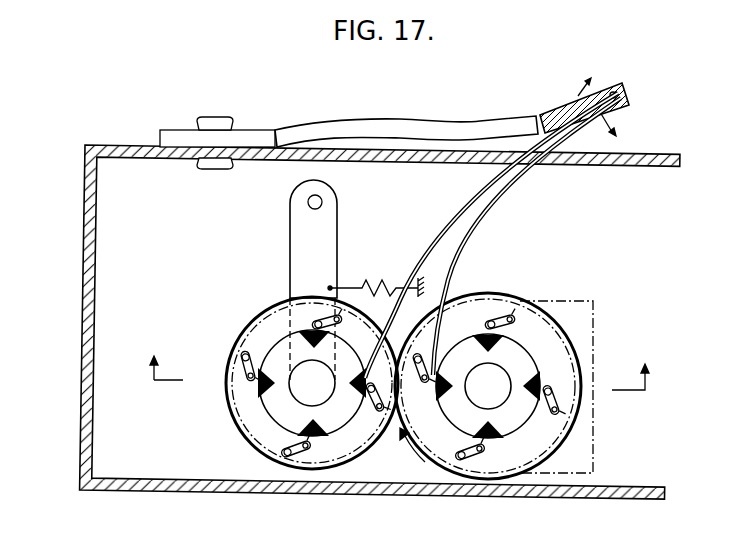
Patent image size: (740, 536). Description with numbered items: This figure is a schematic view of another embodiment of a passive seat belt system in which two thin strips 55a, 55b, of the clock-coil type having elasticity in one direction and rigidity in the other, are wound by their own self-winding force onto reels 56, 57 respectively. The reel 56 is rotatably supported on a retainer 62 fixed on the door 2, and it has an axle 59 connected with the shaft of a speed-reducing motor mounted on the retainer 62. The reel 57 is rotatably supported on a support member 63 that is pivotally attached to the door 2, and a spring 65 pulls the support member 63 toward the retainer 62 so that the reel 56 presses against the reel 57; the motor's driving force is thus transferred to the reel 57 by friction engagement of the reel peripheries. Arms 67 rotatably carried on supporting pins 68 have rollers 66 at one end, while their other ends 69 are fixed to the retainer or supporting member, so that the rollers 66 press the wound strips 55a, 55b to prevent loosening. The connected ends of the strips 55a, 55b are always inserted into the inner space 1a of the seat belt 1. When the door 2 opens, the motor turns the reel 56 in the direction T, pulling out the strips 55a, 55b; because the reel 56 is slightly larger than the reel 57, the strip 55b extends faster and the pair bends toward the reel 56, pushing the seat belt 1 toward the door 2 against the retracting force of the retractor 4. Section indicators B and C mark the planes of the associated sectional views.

The seat belt 1 is at (425, 128).
The inner space 1a is at (560, 112).
The door 2 is at (82, 252).
The retractor 4 is at (305, 196).
The thin strip 55a is at (487, 213).
The thin strip 55b is at (458, 213).
The reel 56 is at (557, 323).
The reel 57 is at (271, 302).
The axle 59 is at (498, 360).
The retainer 62 is at (592, 327).
The support member 63 is at (297, 236).
The spring 65 is at (378, 280).
The roller 66 is at (243, 414).
The arm 67 is at (238, 393).
The supporting pin 68 is at (250, 347).
The other end of arm 69 is at (238, 372).
The section line B is at (399, 361).
The section line C is at (604, 101).
The direction of rotation T is at (406, 450).